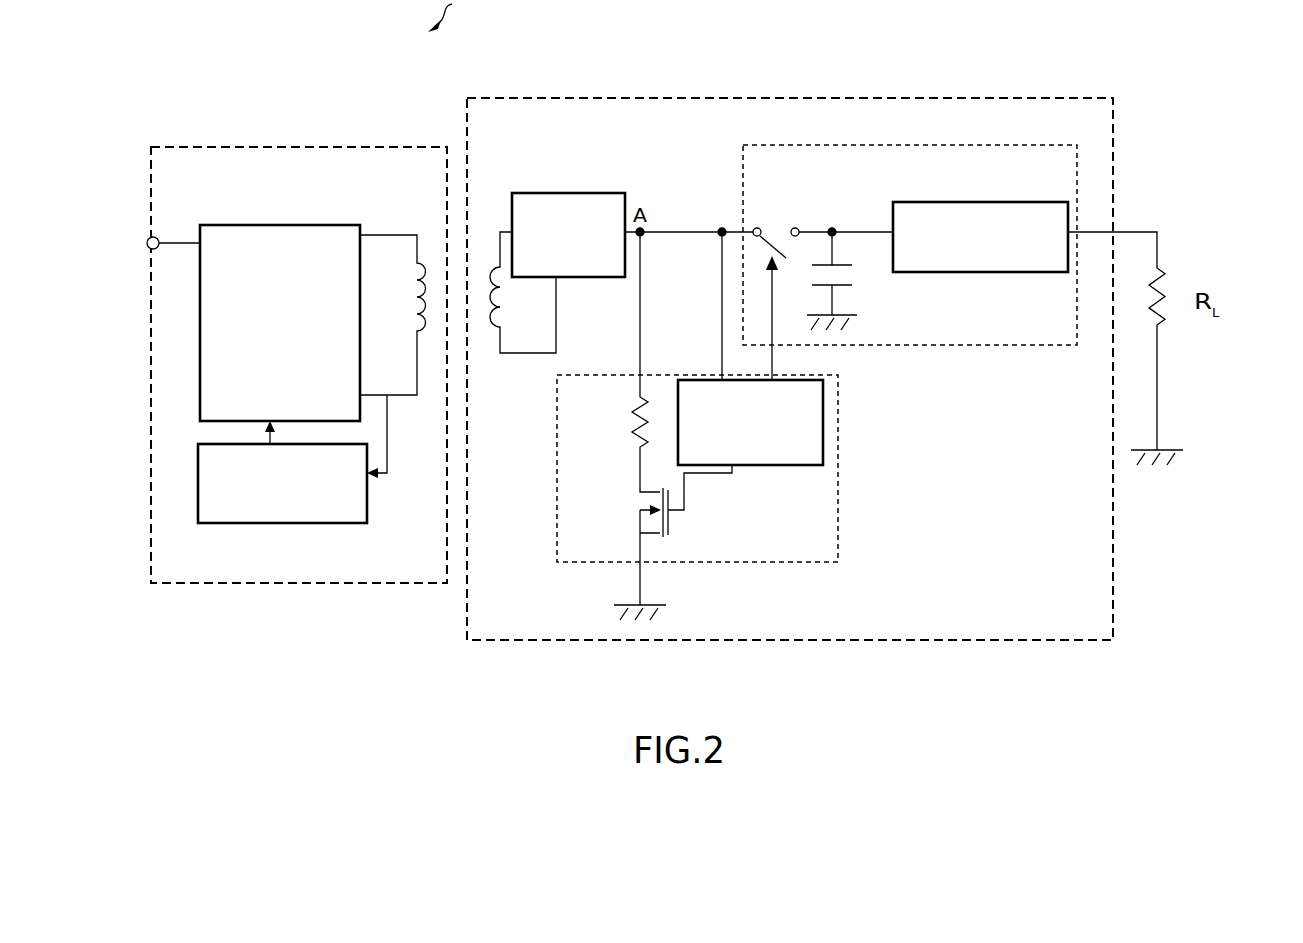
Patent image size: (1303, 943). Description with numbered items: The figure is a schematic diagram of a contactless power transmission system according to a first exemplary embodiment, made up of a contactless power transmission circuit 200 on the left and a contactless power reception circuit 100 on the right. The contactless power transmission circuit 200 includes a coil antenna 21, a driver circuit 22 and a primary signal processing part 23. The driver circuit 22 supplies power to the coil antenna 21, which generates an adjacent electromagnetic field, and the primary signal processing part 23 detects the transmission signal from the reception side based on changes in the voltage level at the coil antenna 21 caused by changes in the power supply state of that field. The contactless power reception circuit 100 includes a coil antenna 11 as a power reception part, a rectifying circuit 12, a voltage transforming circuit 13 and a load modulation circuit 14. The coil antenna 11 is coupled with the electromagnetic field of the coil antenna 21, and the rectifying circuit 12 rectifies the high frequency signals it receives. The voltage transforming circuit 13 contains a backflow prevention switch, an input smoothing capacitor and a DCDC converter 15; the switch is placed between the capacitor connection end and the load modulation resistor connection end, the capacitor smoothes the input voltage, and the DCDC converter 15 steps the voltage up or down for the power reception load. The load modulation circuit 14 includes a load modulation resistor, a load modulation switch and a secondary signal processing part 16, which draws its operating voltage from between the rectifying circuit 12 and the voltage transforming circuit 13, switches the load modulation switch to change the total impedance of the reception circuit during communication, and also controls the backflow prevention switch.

The contactless power transmission circuit 200 is at (300, 147).
The driver circuit 22 is at (300, 225).
The primary signal processing part 23 is at (198, 523).
The coil antenna 21 is at (428, 262).
The contactless power reception circuit 100 is at (470, 98).
The coil antenna 11 is at (497, 265).
The rectifying circuit 12 is at (586, 193).
The voltage transforming circuit 13 is at (745, 150).
The load modulation circuit 14 is at (600, 375).
The DCDC converter 15 is at (893, 202).
The secondary signal processing part 16 is at (775, 465).